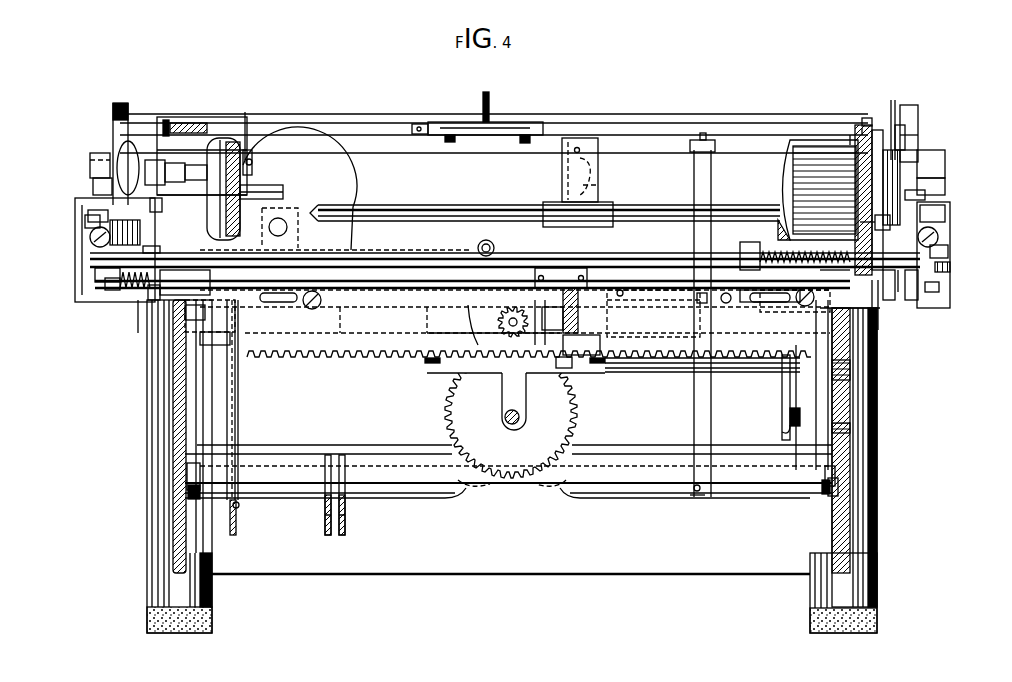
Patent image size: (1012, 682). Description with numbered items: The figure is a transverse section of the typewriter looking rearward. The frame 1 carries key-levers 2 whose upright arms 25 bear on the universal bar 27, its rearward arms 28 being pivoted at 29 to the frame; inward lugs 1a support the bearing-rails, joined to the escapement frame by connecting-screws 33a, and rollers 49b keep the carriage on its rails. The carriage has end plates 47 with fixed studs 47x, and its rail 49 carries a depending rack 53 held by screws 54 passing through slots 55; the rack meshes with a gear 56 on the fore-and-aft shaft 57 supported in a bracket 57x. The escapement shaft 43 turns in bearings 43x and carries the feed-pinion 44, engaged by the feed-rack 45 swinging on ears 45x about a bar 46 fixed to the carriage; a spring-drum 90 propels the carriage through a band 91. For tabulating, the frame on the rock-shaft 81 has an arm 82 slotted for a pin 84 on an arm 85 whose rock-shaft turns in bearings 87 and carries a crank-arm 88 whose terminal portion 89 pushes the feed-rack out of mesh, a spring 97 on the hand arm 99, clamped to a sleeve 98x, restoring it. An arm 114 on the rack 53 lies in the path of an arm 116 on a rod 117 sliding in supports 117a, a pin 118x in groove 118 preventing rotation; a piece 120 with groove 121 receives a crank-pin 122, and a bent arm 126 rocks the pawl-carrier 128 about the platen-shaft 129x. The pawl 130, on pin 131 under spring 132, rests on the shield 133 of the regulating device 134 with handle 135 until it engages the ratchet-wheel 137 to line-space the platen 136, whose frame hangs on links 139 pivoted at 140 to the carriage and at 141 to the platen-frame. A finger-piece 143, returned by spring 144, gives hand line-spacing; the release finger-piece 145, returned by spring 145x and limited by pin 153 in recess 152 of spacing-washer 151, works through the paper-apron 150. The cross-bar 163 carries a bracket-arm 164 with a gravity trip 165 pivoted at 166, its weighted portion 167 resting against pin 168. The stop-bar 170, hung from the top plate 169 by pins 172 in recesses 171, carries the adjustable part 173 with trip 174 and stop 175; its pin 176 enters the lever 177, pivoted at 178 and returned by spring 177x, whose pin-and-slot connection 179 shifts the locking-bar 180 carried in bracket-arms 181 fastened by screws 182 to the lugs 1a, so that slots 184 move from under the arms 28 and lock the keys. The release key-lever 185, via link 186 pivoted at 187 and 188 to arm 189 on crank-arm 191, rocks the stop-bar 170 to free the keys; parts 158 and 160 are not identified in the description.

The frame 1 is at (880, 398).
The lugs 1a is at (214, 345).
The key-levers 2 is at (345, 515).
The upwardly-extending arm 25 is at (341, 458).
The universal bar 27 is at (637, 484).
The rearwardly-extending arms 28 is at (828, 490).
The pivot of universal-bar arms 29 is at (178, 474).
The connecting-screws 33a is at (432, 364).
The shaft 43 is at (506, 338).
The bearings 43x is at (518, 308).
The feed-pinion 44 is at (498, 323).
The feed-rack 45 is at (147, 308).
The ears 45x is at (555, 270).
The bar 46 is at (366, 281).
The end plates 47 is at (78, 264).
The fixed studs 47x is at (90, 217).
The cross-bar or rail 49 is at (190, 312).
The rollers 49b is at (630, 268).
The rack 53 is at (515, 331).
The screws 54 is at (312, 310).
The slots 55 is at (280, 303).
The gear 56 is at (511, 416).
The shaft 57 is at (521, 420).
The bracket 57x is at (513, 401).
The rock-shaft 81 is at (662, 373).
The rearwardly-directed arm 82 is at (782, 431).
The pin 84 is at (788, 418).
The arm 85 is at (782, 388).
The bearings 87 is at (565, 369).
The crank-arm 88 is at (581, 345).
The terminal portion 89 is at (492, 276).
The spring-drum 90 is at (335, 188).
The band 91 is at (357, 312).
The spring 97 is at (130, 292).
The laterally-projecting sleeve 98x is at (138, 315).
The hand-actuated arm 99 is at (160, 250).
The arm 114 is at (770, 302).
The laterally-extending arm 116 is at (746, 246).
The rod 117 is at (709, 252).
The supports 117a is at (108, 276).
The groove 118 is at (916, 280).
The projection or pin 118x is at (950, 268).
The laterally-projecting piece 120 is at (876, 292).
The groove 121 is at (890, 276).
The crank-pin 122 is at (905, 293).
The bent arm 126 is at (887, 222).
The line-spacing pawl-carrier 128 is at (926, 150).
The platen-shaft 129x is at (925, 197).
The line-spacing pawl 130 is at (868, 124).
The pin 131 is at (860, 124).
The spring 132 is at (880, 124).
The shield 133 is at (862, 130).
The line-space-regulating device 134 is at (912, 136).
The finger-piece or handle 135 is at (918, 118).
The platen 136 is at (782, 178).
The line-spacing ratchet-wheel 137 is at (855, 138).
The links 139 is at (93, 186).
The pivot of links to carriage 140 is at (112, 284).
The pivot of links to platen-frame 141 is at (92, 163).
The finger-piece 143 is at (893, 130).
The spring 144 is at (900, 183).
The finger-piece 145 is at (160, 206).
The spring 145x is at (132, 145).
The paper-apron 150 is at (141, 234).
The spacing-washer 151 is at (160, 170).
The recess 152 is at (182, 170).
The pin 153 is at (201, 173).
The post 158 is at (118, 143).
The bar 160 is at (270, 188).
The cross-bar 163 is at (378, 212).
The upright bracket-arm 164 is at (599, 170).
The gravity stop or trip 165 is at (566, 150).
The pivot of gravity stop 166 is at (579, 177).
The weighted portion 167 is at (596, 194).
The pin 168 is at (582, 150).
The top plate 169 is at (372, 114).
The stop-bar 170 is at (233, 120).
The recesses 171 is at (200, 124).
The pins 172 is at (168, 122).
The combined trip or stop 173 is at (490, 124).
The cam-like trip portion 174 is at (524, 143).
The stop 175 is at (450, 143).
The pin 176 is at (716, 134).
The lever 177 is at (712, 160).
The spring 177x is at (739, 310).
The pivot of lever 178 is at (713, 310).
The pin-and-slot connection 179 is at (697, 494).
The locking-bar 180 is at (577, 501).
The depending bracket-arms 181 is at (231, 408).
The screws 182 is at (507, 311).
The slots 184 is at (832, 502).
The margin-stop release key-lever 185 is at (231, 528).
The link 186 is at (239, 380).
The pivot of link to key-lever 187 is at (240, 507).
The pivot of link to arm 188 is at (252, 162).
The arm 189 is at (252, 160).
The crank-arm 191 is at (246, 150).